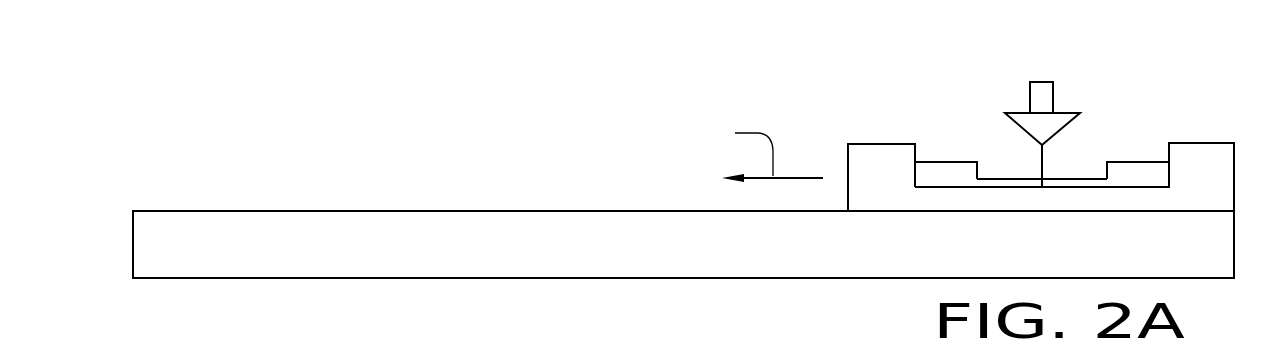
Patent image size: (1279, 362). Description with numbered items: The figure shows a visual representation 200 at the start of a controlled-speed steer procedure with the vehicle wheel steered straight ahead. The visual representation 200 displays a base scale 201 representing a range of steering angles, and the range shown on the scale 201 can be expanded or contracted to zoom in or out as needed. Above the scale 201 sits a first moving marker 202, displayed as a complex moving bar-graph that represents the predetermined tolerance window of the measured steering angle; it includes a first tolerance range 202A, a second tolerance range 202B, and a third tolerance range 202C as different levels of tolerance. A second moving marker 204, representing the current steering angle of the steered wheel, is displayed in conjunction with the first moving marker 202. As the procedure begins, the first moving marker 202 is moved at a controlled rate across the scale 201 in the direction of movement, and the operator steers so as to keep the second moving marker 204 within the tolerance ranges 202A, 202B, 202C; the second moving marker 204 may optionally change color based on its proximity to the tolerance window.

The visual representation 200 is at (476, 148).
The base scale 201 is at (225, 242).
The first moving marker 202 is at (883, 143).
The first tolerance range 202A is at (1017, 163).
The second tolerance range 202B is at (940, 148).
The third tolerance range 202C is at (866, 126).
The second moving marker 204 is at (1053, 110).